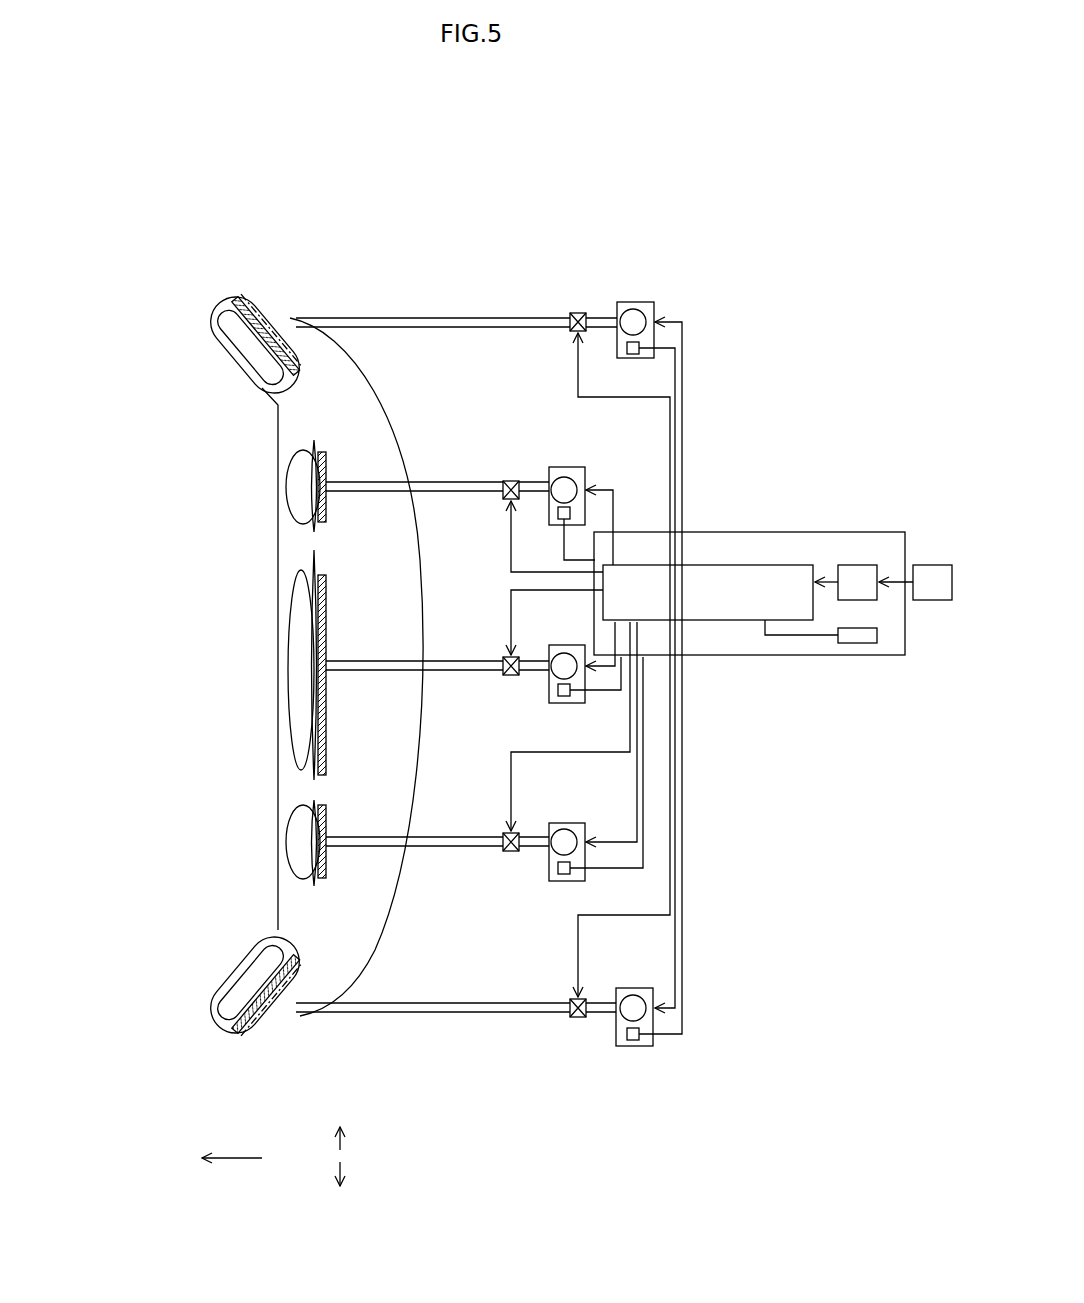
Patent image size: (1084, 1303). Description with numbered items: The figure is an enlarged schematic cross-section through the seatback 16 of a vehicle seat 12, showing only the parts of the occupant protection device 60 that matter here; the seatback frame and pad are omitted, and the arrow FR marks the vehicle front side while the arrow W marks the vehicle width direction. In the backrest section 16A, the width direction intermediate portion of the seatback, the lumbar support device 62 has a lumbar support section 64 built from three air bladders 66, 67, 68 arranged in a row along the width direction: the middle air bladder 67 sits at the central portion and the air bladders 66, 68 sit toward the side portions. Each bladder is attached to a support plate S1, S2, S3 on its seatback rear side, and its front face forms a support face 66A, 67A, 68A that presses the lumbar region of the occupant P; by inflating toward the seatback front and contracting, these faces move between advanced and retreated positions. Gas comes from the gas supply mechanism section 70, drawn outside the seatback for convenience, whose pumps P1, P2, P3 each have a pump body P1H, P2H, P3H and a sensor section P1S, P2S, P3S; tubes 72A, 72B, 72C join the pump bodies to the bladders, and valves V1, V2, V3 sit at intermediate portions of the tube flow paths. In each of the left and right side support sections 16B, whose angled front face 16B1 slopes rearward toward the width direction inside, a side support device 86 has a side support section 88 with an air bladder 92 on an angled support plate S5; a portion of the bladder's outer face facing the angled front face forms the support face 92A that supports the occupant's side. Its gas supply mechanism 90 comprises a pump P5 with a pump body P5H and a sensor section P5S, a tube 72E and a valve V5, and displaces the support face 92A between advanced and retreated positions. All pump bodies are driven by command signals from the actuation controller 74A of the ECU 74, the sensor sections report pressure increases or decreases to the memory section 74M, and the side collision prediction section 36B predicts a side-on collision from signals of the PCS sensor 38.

The vehicle seat 12 is at (365, 186).
The seatback 16 is at (325, 240).
The backrest section 16A is at (278, 540).
The side support section 16B is at (220, 318).
The angled front face 16B1 is at (265, 352).
The occupant protection device 60 is at (697, 160).
The lumbar support device 62 is at (283, 726).
The lumbar support section 64 is at (285, 705).
The air bladder 66 is at (298, 456).
The support face 66A is at (312, 480).
The air bladder 67 is at (296, 586).
The support face 67A is at (303, 605).
The air bladder 68 is at (298, 806).
The support face 68A is at (298, 822).
The gas supply mechanism section 70 is at (510, 407).
The tube 72A is at (432, 482).
The tube 72B is at (455, 661).
The tube 72C is at (455, 837).
The tube 72E is at (432, 318).
The ECU 74 is at (716, 532).
The actuation controller 74A is at (643, 565).
The memory section 74M is at (856, 644).
The side collision prediction section 36B is at (858, 565).
The pre-crash safety (PCS) sensor 38 is at (934, 565).
The side support device 86 is at (228, 300).
The side support section 88 is at (262, 365).
The gas supply mechanism 90 is at (598, 236).
The air bladder 92 is at (245, 340).
The support face 92A is at (245, 303).
The occupant P is at (262, 395).
The support plate S1 is at (330, 470).
The support plate S2 is at (330, 598).
The support plate S3 is at (330, 825).
The support plate S5 is at (280, 320).
The valve V1 is at (506, 482).
The valve V2 is at (506, 657).
The valve V3 is at (506, 833).
The valve V5 is at (572, 314).
The pump P1 is at (556, 475).
The pump body P1H is at (573, 475).
The sensor section P1S is at (556, 518).
The pump P2 is at (556, 651).
The pump body P2H is at (560, 651).
The sensor section P2S is at (552, 695).
The pump P3 is at (556, 828).
The pump body P3H is at (573, 828).
The sensor section P3S is at (552, 871).
The pump P5 is at (626, 305).
The pump body P5H is at (641, 304).
The sensor section P5S is at (622, 350).
The arrow FR is at (212, 1157).
The arrow W is at (364, 1156).